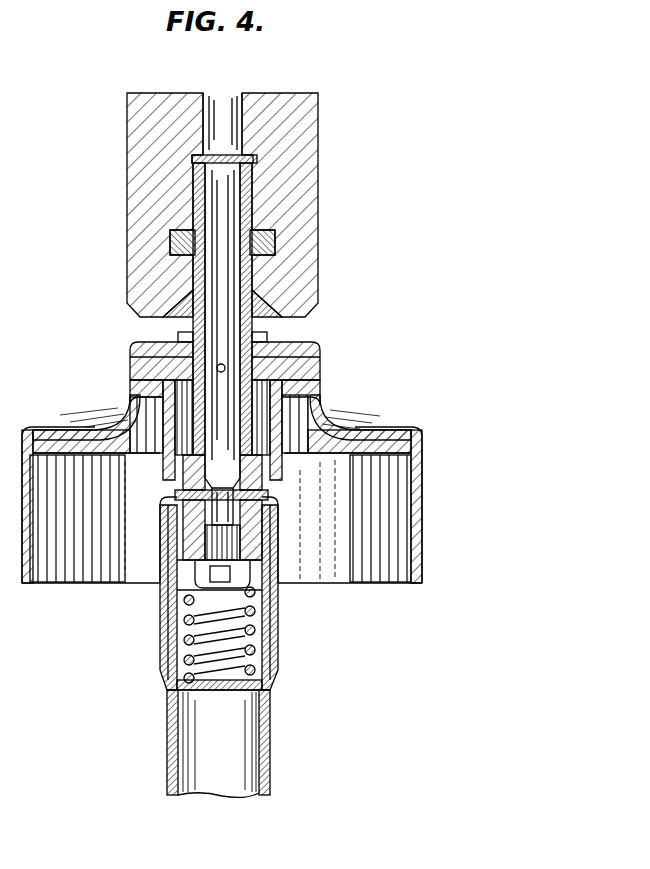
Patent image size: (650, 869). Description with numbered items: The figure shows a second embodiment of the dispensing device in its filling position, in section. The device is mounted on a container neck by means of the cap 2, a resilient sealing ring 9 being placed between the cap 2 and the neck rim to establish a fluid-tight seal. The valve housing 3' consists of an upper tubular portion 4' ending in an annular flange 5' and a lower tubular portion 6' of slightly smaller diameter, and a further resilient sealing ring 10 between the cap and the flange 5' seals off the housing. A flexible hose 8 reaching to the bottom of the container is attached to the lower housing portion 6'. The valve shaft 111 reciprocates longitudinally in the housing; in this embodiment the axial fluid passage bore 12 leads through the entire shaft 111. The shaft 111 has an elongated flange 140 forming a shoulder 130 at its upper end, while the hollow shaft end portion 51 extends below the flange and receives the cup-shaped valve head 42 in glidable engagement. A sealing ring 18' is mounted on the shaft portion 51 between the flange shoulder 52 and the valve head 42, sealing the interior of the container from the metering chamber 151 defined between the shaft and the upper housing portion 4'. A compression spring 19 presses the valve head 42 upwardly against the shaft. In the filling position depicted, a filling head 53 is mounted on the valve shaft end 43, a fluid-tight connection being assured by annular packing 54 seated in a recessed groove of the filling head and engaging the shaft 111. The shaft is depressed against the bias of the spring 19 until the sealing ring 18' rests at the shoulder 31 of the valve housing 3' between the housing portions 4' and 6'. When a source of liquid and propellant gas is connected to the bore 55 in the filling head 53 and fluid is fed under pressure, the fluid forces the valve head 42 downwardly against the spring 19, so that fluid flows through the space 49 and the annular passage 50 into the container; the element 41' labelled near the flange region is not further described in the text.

The cap 2 is at (422, 504).
The valve housing 3' is at (193, 673).
The upper tubular portion 4' is at (164, 466).
The annular flange 5' is at (98, 401).
The lower tubular portion 6' is at (191, 583).
The flexible hose 8 is at (270, 736).
The resilient sealing ring 9 is at (388, 433).
The resilient sealing ring 10 is at (319, 356).
The axial fluid passage bore 12 is at (205, 192).
The resilient sealing ring 18' is at (249, 530).
The compression spring 19 is at (170, 641).
The shoulder 31 is at (268, 486).
The boss 41' is at (162, 332).
The valve head 42 is at (165, 537).
The valve shaft end 43 is at (247, 176).
The interspace 49 is at (165, 512).
The annular passage 50 is at (268, 578).
The hollow shaft end portion 51 is at (268, 538).
The flange shoulder 52 is at (170, 489).
The filling head 53 is at (305, 111).
The annular packing 54 is at (172, 243).
The bore 55 is at (218, 96).
The valve shaft 111 is at (258, 336).
The shoulder 130 is at (163, 402).
The elongated flange 140 is at (268, 468).
The metering chamber 151 is at (281, 394).